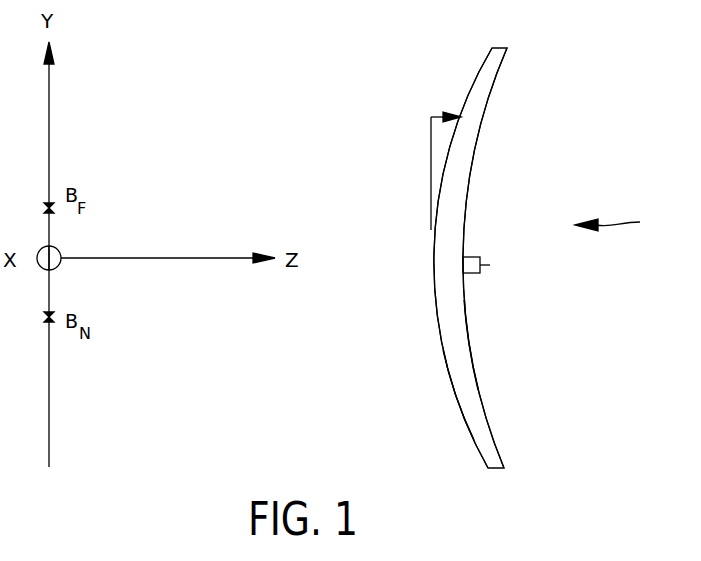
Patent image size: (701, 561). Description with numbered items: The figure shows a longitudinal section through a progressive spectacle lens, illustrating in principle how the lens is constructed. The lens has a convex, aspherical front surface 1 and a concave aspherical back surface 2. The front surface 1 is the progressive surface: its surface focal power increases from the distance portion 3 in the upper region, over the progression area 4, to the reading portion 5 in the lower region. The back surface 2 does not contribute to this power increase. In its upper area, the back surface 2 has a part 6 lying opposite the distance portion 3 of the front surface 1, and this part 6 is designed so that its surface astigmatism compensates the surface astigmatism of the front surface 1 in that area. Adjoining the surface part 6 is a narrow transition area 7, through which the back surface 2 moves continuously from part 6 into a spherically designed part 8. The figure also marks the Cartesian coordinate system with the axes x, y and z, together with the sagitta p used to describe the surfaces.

The front surface 1 is at (438, 67).
The back surface 2 is at (617, 224).
The distance portion 3 is at (455, 130).
The progression area 4 is at (433, 252).
The reading portion 5 is at (453, 390).
The part of back surface 6 is at (483, 122).
The transition area 7 is at (492, 272).
The spherically designed part 8 is at (472, 353).